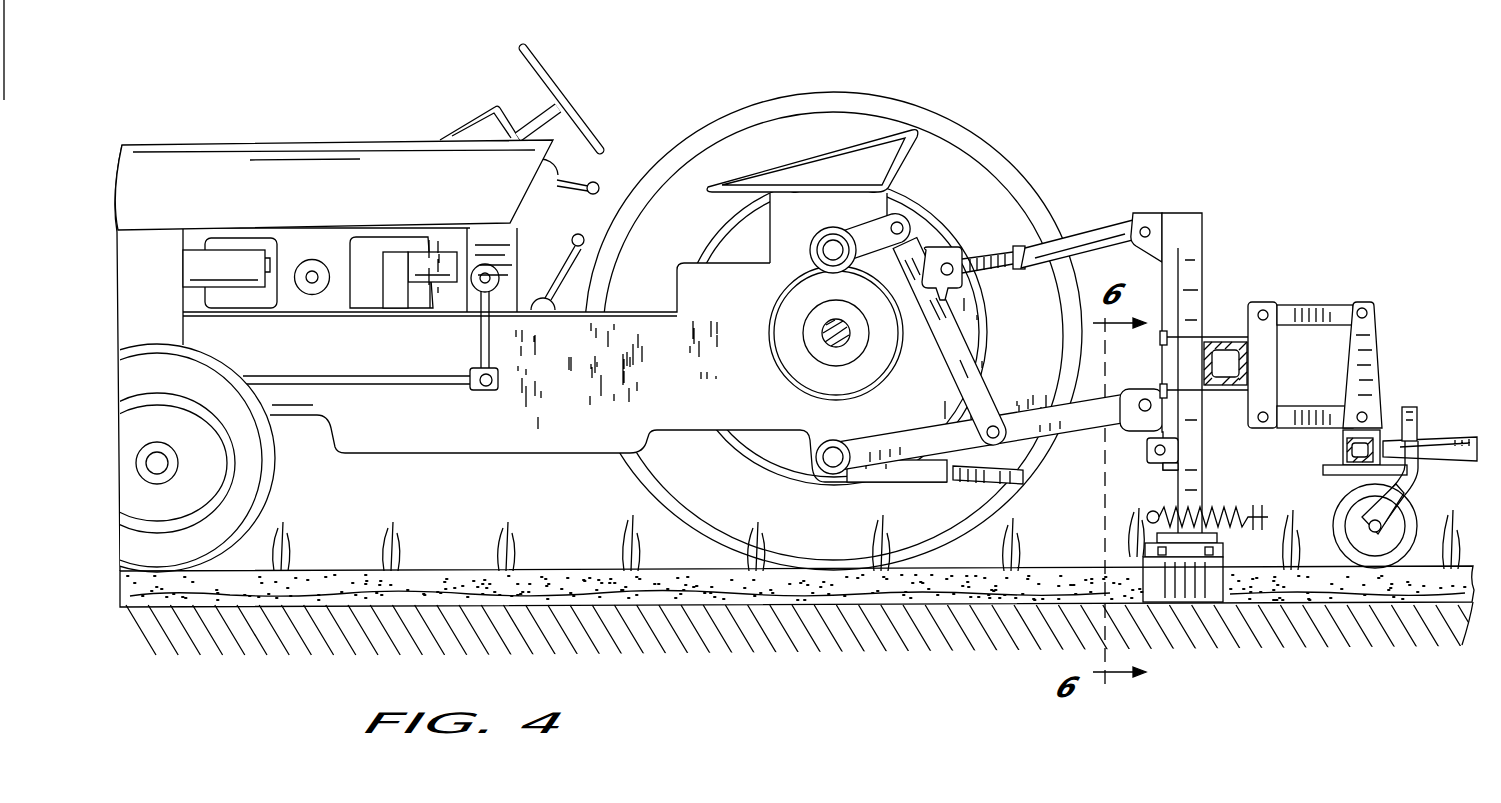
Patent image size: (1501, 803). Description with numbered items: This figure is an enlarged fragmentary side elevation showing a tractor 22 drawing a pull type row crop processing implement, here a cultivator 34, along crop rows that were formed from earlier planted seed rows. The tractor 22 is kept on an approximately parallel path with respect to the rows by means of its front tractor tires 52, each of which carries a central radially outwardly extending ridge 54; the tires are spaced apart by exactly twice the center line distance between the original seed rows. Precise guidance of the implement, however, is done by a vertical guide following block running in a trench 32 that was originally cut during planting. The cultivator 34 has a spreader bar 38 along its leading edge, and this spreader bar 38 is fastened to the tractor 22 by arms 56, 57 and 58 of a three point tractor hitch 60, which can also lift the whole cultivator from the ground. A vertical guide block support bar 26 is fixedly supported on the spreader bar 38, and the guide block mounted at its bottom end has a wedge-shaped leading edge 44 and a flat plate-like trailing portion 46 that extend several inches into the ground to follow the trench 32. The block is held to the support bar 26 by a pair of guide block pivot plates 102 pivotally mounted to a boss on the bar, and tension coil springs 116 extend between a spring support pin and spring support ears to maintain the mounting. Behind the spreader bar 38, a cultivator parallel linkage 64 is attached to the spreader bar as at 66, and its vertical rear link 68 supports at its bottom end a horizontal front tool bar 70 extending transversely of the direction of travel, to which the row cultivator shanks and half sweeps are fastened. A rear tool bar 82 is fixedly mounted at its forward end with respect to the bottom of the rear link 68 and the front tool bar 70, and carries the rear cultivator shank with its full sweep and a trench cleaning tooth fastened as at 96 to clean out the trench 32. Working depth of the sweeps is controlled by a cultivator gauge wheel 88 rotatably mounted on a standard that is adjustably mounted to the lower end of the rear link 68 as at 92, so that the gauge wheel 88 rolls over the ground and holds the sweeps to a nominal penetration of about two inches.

The tractor 22 is at (326, 150).
The vertical guide block support bar 26 is at (1192, 270).
The trench 32 is at (525, 580).
The cultivator 34 is at (1308, 300).
The spreader bar 38 is at (1222, 350).
The wedge-shaped leading edge 44 is at (1122, 576).
The flat plate-like trailing portion 46 is at (1207, 583).
The front tractor tire 52 is at (257, 483).
The central radially outwardly extending ridge 54 is at (265, 520).
The hitch arm 56 is at (1030, 246).
The hitch arm 57 is at (1017, 423).
The hitch arm 58 is at (1093, 430).
The three point tractor hitch 60 is at (1086, 230).
The cultivator parallel linkage 64 is at (1384, 318).
The attachment of parallel linkage to spreader bar 66 is at (1268, 344).
The vertical rear link 68 is at (1366, 350).
The horizontal front tool bar 70 is at (1340, 446).
The rear tool bar 82 is at (1458, 440).
The cultivator gauge wheel 88 is at (1352, 500).
The adjustable mounting of gauge wheel standard 92 is at (1427, 407).
The fastening of trench cleaning tooth 96 is at (1416, 492).
The guide block pivot plate 102 is at (1187, 453).
The tension coil spring 116 is at (1215, 490).